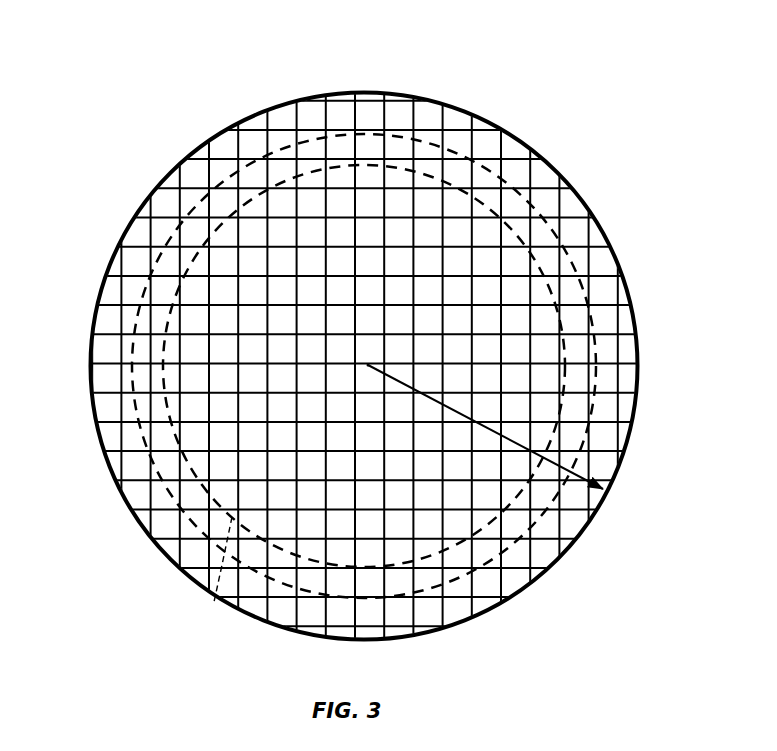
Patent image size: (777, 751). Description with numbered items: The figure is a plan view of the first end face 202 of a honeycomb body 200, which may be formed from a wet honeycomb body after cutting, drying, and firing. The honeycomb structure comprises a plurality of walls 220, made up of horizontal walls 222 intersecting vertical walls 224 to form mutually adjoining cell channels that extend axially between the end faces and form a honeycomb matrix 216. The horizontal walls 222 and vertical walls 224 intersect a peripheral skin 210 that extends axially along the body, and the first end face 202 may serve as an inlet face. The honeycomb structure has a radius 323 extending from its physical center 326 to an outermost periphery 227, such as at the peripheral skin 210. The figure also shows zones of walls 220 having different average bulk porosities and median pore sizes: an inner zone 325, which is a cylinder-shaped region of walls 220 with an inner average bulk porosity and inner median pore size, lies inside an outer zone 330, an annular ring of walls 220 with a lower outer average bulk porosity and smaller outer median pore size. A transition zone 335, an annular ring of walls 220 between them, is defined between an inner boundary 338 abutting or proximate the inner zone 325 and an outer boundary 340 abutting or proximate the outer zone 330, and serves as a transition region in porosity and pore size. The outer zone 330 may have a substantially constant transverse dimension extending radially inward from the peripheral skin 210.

The honeycomb body 200 is at (473, 90).
The first end face 202 is at (243, 111).
The peripheral skin 210 is at (543, 573).
The honeycomb matrix 216 is at (207, 186).
The walls 220 is at (565, 213).
The horizontal walls 222 is at (540, 188).
The vertical walls 224 is at (630, 297).
The outermost periphery 227 is at (598, 502).
The radius 323 is at (576, 473).
The inner zone 325 is at (245, 322).
The physical center 326 is at (369, 364).
The outer zone 330 is at (134, 470).
The transition zone 335 is at (256, 555).
The inner boundary 338 is at (205, 570).
The outer boundary 340 is at (286, 588).